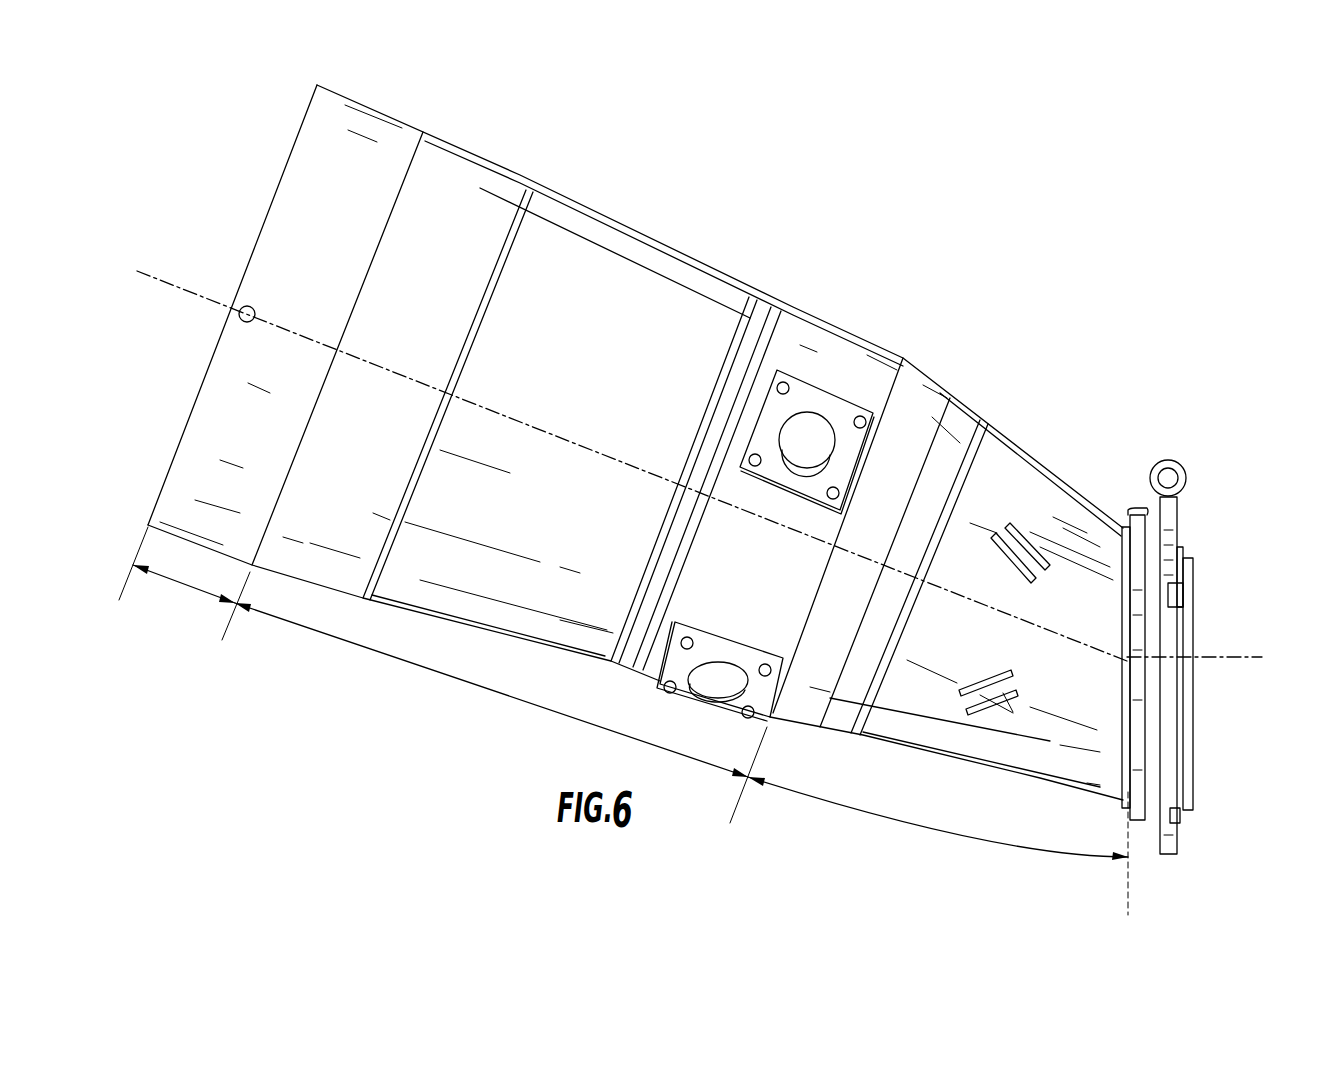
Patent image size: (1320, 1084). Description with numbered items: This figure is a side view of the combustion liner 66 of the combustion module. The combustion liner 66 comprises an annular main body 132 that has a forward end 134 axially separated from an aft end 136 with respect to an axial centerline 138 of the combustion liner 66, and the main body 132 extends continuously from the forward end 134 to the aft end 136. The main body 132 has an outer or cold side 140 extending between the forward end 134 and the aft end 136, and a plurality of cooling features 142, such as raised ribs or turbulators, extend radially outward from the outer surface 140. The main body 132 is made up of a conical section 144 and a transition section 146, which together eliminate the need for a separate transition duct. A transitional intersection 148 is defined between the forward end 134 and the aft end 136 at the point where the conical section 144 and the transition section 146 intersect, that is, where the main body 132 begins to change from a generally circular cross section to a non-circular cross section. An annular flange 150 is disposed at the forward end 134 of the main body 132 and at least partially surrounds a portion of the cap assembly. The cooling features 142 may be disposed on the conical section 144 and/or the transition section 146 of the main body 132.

The combustion liner 66 is at (894, 237).
The main body 132 is at (635, 442).
The forward end 134 is at (382, 319).
The aft end 136 is at (1147, 602).
The axial centerline 138 is at (153, 272).
The outer or cold side 140 is at (720, 310).
The cooling features 142 is at (731, 462).
The conical section 144 is at (501, 713).
The transition section 146 is at (938, 850).
The transitional intersection 148 is at (873, 497).
The annular flange 150 is at (184, 598).